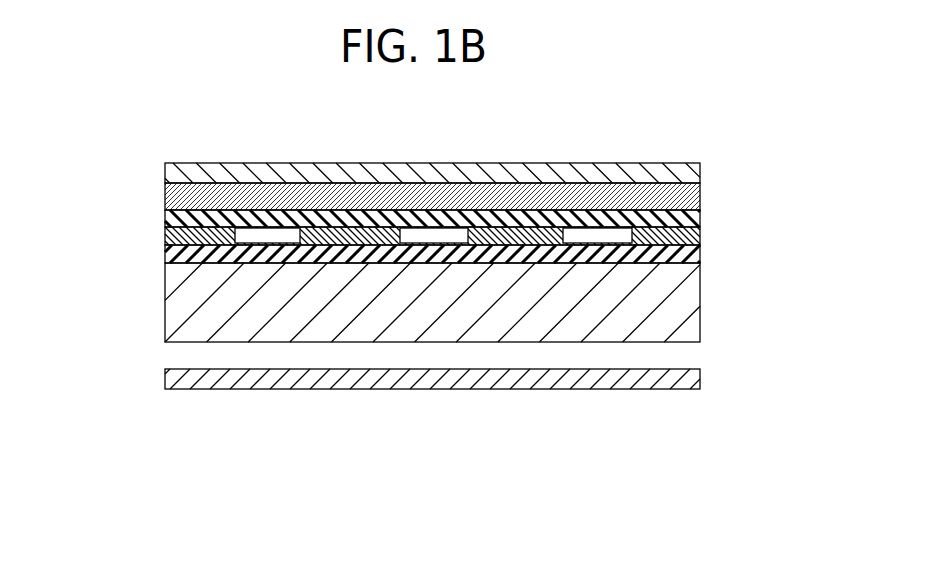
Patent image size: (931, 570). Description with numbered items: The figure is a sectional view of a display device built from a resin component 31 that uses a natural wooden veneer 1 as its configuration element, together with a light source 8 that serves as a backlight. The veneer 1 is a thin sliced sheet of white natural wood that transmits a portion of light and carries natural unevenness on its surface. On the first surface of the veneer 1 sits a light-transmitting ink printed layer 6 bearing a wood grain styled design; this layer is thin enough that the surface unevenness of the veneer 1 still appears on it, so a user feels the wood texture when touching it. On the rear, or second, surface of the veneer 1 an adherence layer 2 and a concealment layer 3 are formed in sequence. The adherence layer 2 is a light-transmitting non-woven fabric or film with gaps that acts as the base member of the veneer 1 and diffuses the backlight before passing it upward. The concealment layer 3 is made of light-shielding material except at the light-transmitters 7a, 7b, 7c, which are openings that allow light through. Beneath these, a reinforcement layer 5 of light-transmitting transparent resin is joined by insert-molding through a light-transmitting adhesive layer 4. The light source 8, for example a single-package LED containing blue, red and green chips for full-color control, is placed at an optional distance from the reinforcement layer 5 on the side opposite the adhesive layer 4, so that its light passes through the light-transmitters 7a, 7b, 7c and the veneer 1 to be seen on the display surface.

The veneer 1 is at (690, 199).
The adherence layer 2 is at (690, 219).
The concealment layer 3 is at (690, 237).
The adhesive layer 4 is at (690, 254).
The reinforcement layer 5 is at (693, 298).
The light-transmitting ink printed layer 6 is at (693, 172).
The light-transmitter 7a is at (268, 236).
The light-transmitter 7b is at (438, 236).
The light-transmitter 7c is at (600, 236).
The light source 8 is at (178, 380).
The resin component 31 is at (428, 222).